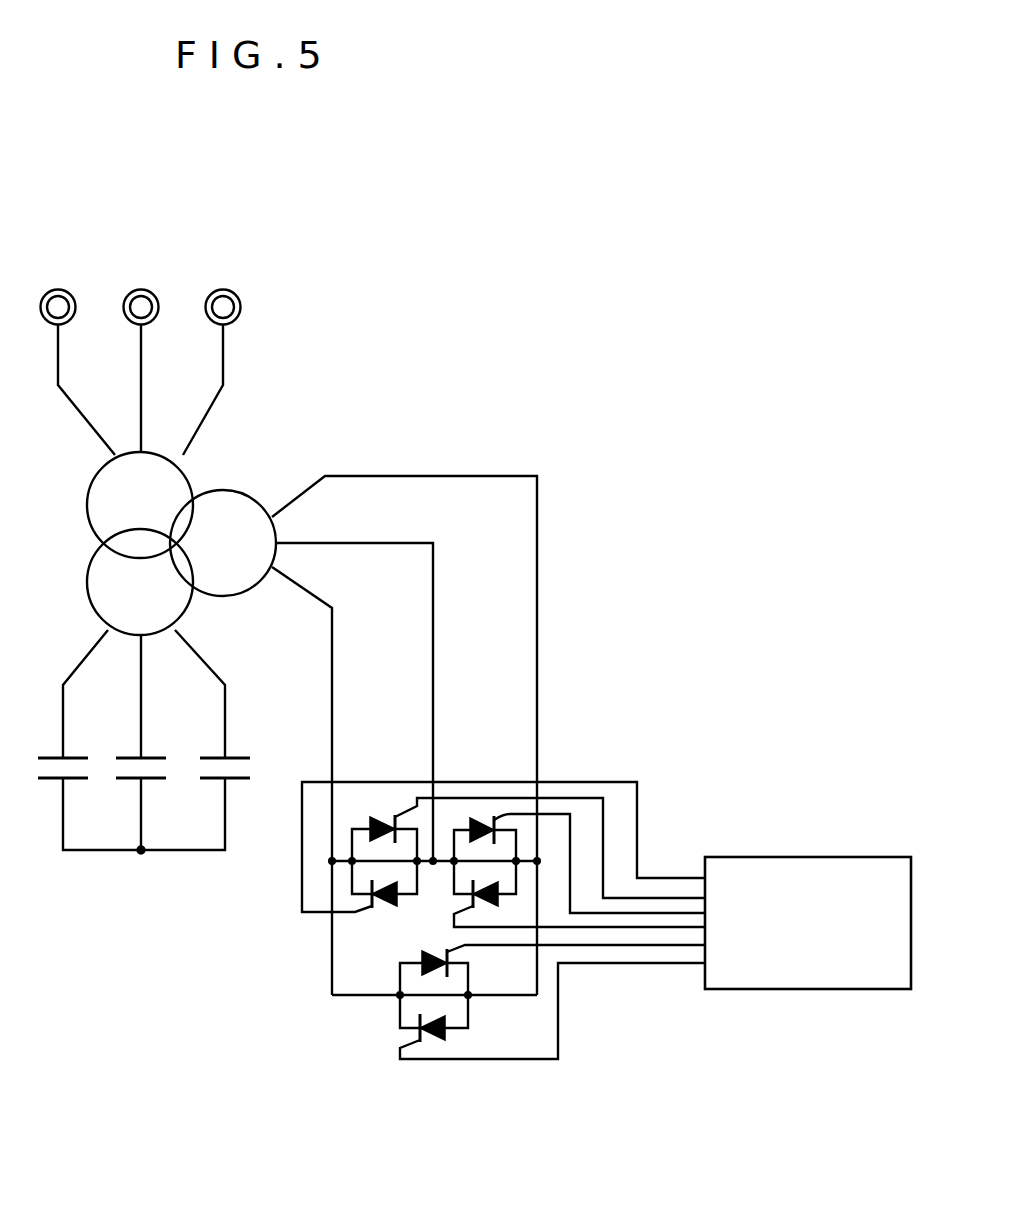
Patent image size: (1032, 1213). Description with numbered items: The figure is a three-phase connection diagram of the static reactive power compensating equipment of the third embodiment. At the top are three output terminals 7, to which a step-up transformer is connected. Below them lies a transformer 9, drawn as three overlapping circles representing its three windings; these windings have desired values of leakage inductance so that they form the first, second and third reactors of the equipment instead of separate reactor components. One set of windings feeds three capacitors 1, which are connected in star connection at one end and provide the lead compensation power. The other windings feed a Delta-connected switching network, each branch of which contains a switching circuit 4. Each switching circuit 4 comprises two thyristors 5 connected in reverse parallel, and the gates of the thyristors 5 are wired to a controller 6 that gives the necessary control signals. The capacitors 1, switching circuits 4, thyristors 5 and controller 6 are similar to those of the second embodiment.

The capacitors 1 is at (75, 760).
The switching circuit 4 is at (360, 835).
The thyristors 5 is at (383, 827).
The controller circuit 6 is at (800, 857).
The output terminals 7 is at (67, 288).
The transformer 9 is at (240, 492).